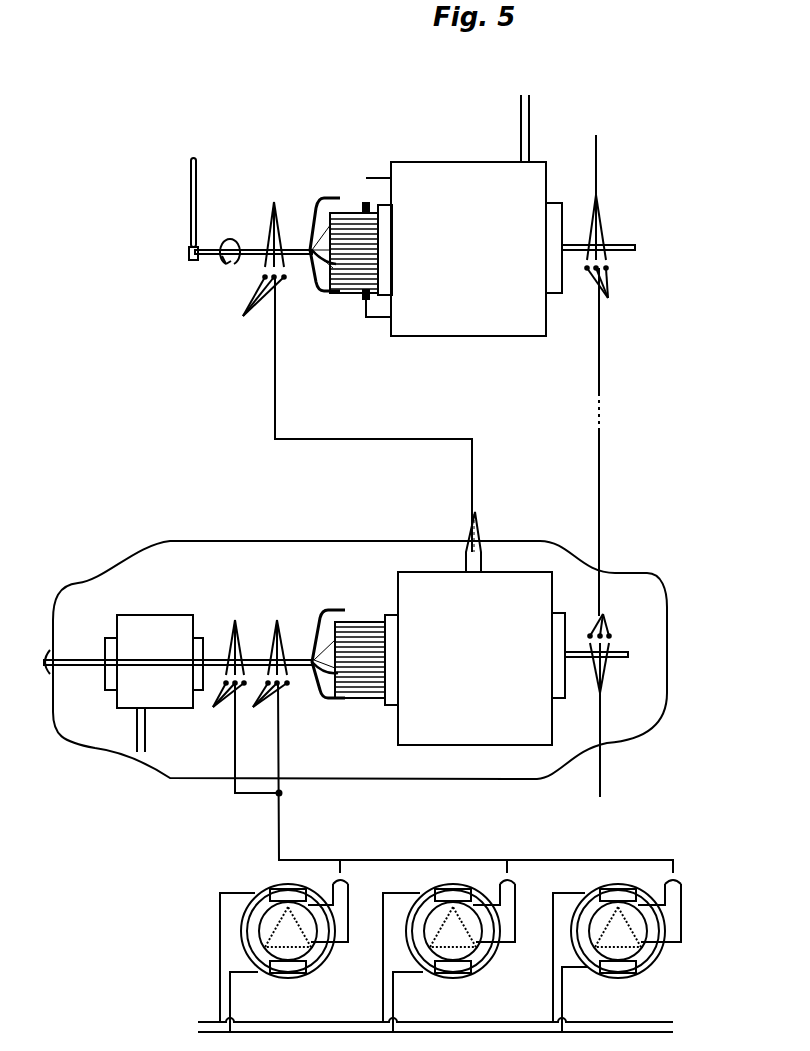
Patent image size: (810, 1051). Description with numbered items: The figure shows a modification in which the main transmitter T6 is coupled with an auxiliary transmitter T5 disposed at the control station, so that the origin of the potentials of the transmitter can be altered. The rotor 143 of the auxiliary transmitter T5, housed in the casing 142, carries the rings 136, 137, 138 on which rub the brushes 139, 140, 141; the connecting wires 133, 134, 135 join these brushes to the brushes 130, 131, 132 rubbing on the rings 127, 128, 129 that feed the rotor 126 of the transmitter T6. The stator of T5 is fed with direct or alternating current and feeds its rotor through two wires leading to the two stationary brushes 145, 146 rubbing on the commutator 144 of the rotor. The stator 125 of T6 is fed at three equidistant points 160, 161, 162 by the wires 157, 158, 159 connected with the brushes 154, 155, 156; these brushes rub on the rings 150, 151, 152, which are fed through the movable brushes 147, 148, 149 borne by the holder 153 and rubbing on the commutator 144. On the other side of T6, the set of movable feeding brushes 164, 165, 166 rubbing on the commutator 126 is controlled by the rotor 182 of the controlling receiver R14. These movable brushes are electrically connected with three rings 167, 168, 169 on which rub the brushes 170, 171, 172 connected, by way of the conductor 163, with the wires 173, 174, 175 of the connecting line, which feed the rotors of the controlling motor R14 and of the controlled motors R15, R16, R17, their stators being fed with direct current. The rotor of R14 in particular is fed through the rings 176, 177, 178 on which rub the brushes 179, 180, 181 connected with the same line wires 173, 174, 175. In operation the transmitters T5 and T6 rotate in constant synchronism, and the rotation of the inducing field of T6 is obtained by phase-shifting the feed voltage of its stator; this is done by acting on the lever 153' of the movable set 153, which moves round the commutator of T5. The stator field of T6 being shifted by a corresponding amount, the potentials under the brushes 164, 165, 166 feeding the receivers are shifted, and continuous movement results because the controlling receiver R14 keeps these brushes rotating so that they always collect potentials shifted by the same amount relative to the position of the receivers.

The stator 125 is at (528, 597).
The rotor 126 is at (611, 618).
The ring 127 is at (647, 745).
The ring 128 is at (647, 745).
The ring 129 is at (694, 797).
The brush 130 is at (665, 621).
The brush 131 is at (665, 621).
The brush 132 is at (665, 621).
The connecting wire 133 is at (645, 442).
The connecting wire 134 is at (645, 442).
The connecting wire 135 is at (692, 440).
The ring 136 is at (633, 193).
The ring 137 is at (633, 193).
The ring 138 is at (682, 134).
The brush 139 is at (639, 283).
The brush 140 is at (639, 283).
The brush 141 is at (692, 298).
The motor T5 casing 142 is at (468, 218).
The rotor 143 is at (552, 215).
The commutator 144 is at (340, 181).
The stationary brush 145 is at (366, 203).
The stationary brush 146 is at (310, 340).
The movable brush 147 is at (274, 197).
The movable brush 148 is at (274, 197).
The movable brush 149 is at (274, 197).
The ring 150 is at (228, 207).
The ring 151 is at (228, 207).
The ring 152 is at (228, 207).
The holder 153 is at (221, 209).
The lever 153' is at (170, 202).
The brush 154 is at (212, 298).
The brush 155 is at (212, 298).
The brush 156 is at (243, 319).
The wire 157 is at (312, 414).
The wire 158 is at (312, 414).
The wire 159 is at (275, 418).
The equidistant point 160 is at (523, 533).
The equidistant point 161 is at (523, 533).
The equidistant point 162 is at (580, 510).
The conductor 163 is at (414, 778).
The movable feeding brush 164 is at (375, 598).
The movable feeding brush 165 is at (375, 598).
The movable feeding brush 166 is at (326, 610).
The ring 167 is at (329, 576).
The ring 168 is at (329, 576).
The ring 169 is at (277, 620).
The brush 170 is at (186, 743).
The brush 171 is at (186, 743).
The brush 172 is at (186, 743).
The wire 173 is at (239, 753).
The wire 174 is at (239, 753).
The wire 175 is at (239, 753).
The ring 176 is at (205, 632).
The ring 177 is at (205, 632).
The ring 178 is at (205, 632).
The brush 179 is at (147, 733).
The brush 180 is at (147, 733).
The brush 181 is at (147, 733).
The rotor 182 is at (181, 595).
The controlling receiver R14 is at (153, 645).
The controlled motor R15 is at (284, 946).
The controlled motor R16 is at (449, 946).
The controlled motor R17 is at (617, 956).
The auxiliary transmitter T5 is at (468, 249).
The transmitter T6 is at (475, 658).